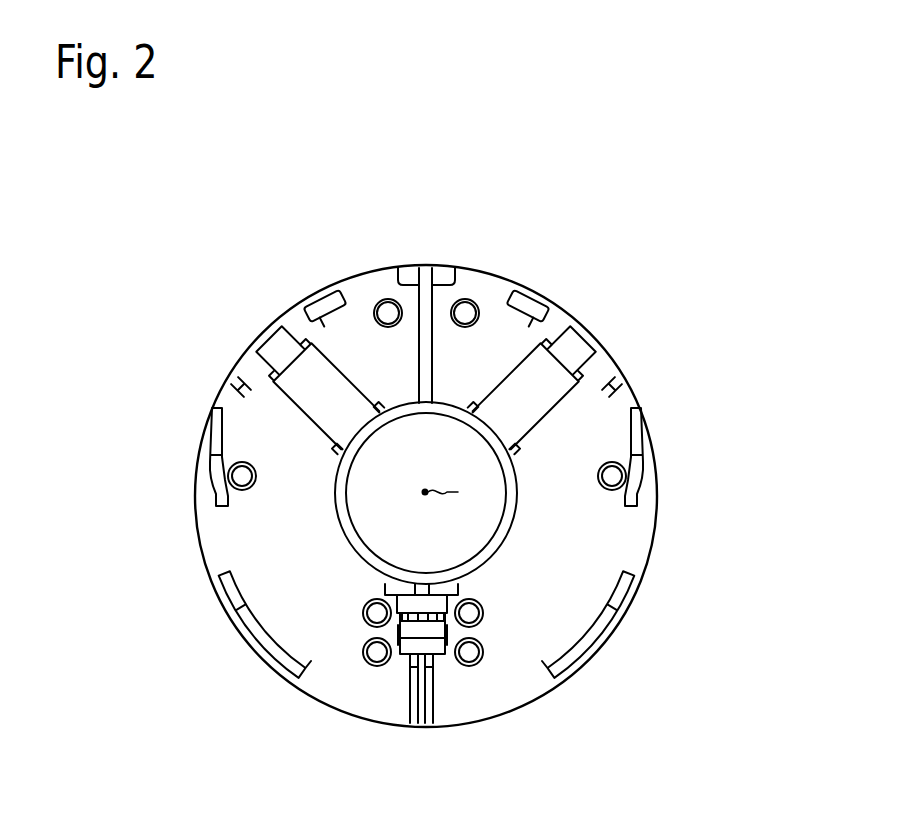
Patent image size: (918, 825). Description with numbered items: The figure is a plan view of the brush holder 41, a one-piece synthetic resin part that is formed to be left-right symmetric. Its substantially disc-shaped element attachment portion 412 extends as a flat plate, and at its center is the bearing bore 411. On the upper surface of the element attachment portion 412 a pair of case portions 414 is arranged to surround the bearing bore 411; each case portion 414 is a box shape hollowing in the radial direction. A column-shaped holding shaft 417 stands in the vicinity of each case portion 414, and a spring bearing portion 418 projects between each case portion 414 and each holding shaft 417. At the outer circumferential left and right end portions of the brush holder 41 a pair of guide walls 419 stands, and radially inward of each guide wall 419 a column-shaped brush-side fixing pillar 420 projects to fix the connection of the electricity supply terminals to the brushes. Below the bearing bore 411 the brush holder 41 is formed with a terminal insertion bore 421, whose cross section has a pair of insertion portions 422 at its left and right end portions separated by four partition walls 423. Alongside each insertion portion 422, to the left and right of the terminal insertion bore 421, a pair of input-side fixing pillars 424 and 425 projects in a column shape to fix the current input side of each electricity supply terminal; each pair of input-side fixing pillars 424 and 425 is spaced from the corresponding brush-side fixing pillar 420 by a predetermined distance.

The brush holder 41 is at (676, 247).
The bearing bore 411 is at (477, 530).
The element attachment portion 412 is at (537, 685).
The case portion 414 is at (312, 377).
The holding shaft 417 is at (463, 299).
The spring bearing portion 418 is at (330, 297).
The guide wall 419 is at (213, 477).
The brush-side fixing pillar 420 is at (243, 462).
The terminal insertion bore 421 is at (405, 660).
The insertion portion 422 is at (398, 634).
The partition wall 423 is at (412, 668).
The input-side fixing pillar 424 is at (365, 612).
The input-side fixing pillar 425 is at (372, 666).